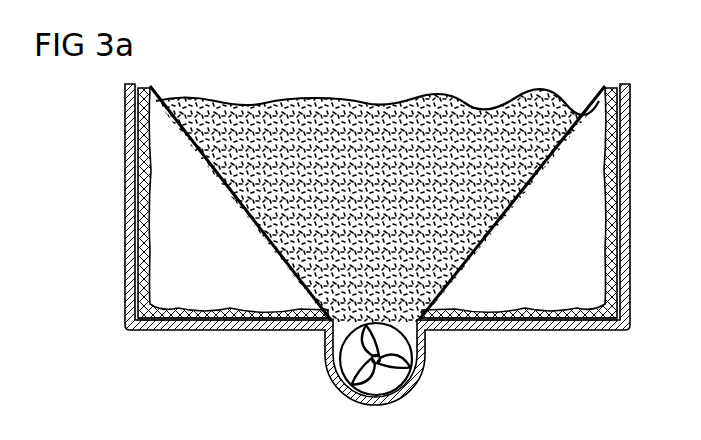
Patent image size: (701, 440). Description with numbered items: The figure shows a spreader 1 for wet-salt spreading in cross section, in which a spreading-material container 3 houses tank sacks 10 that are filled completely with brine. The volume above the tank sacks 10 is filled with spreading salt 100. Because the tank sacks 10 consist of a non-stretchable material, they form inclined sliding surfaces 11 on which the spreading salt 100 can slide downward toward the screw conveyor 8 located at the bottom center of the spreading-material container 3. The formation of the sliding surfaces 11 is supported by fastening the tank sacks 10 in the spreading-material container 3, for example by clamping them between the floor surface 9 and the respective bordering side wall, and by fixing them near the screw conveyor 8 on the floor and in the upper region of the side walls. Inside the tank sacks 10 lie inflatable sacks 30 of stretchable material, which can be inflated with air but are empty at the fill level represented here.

The spreader 1 is at (80, 127).
The spreading-material container 3 is at (125, 276).
The inflatable sack 30 is at (127, 210).
The floor surface 9 is at (254, 325).
The tank sack 10 is at (223, 300).
The sliding surface 11 is at (183, 113).
The spreading salt 100 is at (388, 110).
The screw conveyor 8 is at (403, 375).